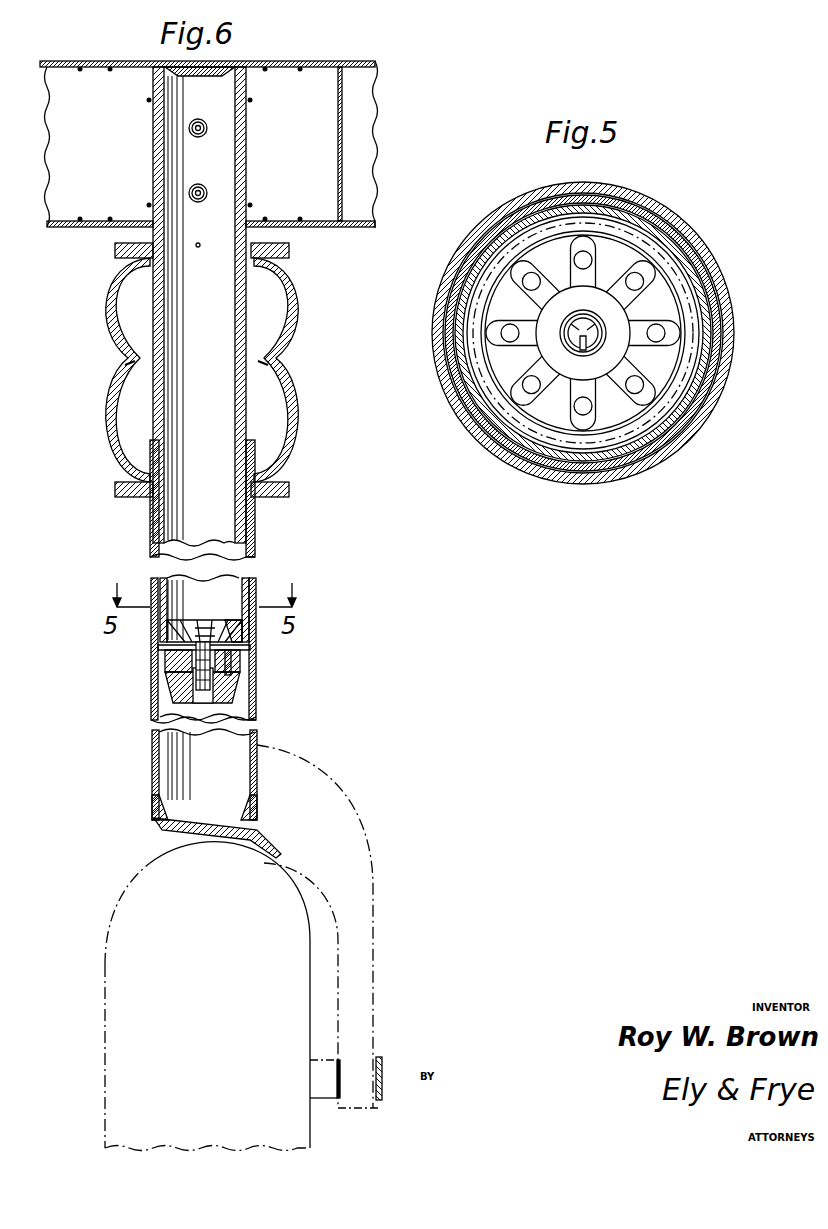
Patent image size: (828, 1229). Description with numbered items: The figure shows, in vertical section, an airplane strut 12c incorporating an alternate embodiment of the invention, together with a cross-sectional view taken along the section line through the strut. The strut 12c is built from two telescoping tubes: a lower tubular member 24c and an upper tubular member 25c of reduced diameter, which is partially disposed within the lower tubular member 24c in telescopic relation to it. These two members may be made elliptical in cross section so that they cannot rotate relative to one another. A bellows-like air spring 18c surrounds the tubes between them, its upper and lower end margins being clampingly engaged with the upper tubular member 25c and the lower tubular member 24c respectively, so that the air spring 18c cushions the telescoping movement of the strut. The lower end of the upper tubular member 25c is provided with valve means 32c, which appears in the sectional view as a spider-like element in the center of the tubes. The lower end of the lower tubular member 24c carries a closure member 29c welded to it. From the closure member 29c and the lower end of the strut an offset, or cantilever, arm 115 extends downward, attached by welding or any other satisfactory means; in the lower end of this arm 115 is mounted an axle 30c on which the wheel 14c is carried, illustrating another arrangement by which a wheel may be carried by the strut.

In FIG. 6, the strut 12c is at (252, 645).
In FIG. 6, the wheel 14c is at (109, 976).
In FIG. 6, the bellows-like air spring 18c is at (306, 309).
In FIG. 6, the lower tubular member 24c is at (256, 702).
In FIG. 5, the lower tubular member 24c is at (650, 196).
In FIG. 6, the upper tubular member 25c is at (236, 336).
In FIG. 5, the upper tubular member 25c is at (700, 228).
In FIG. 6, the closure member 29c is at (156, 826).
In FIG. 6, the axle 30c is at (322, 1098).
In FIG. 6, the valve means 32c is at (216, 616).
In FIG. 5, the valve means 32c is at (618, 320).
In FIG. 6, the offset arm 115 is at (373, 866).